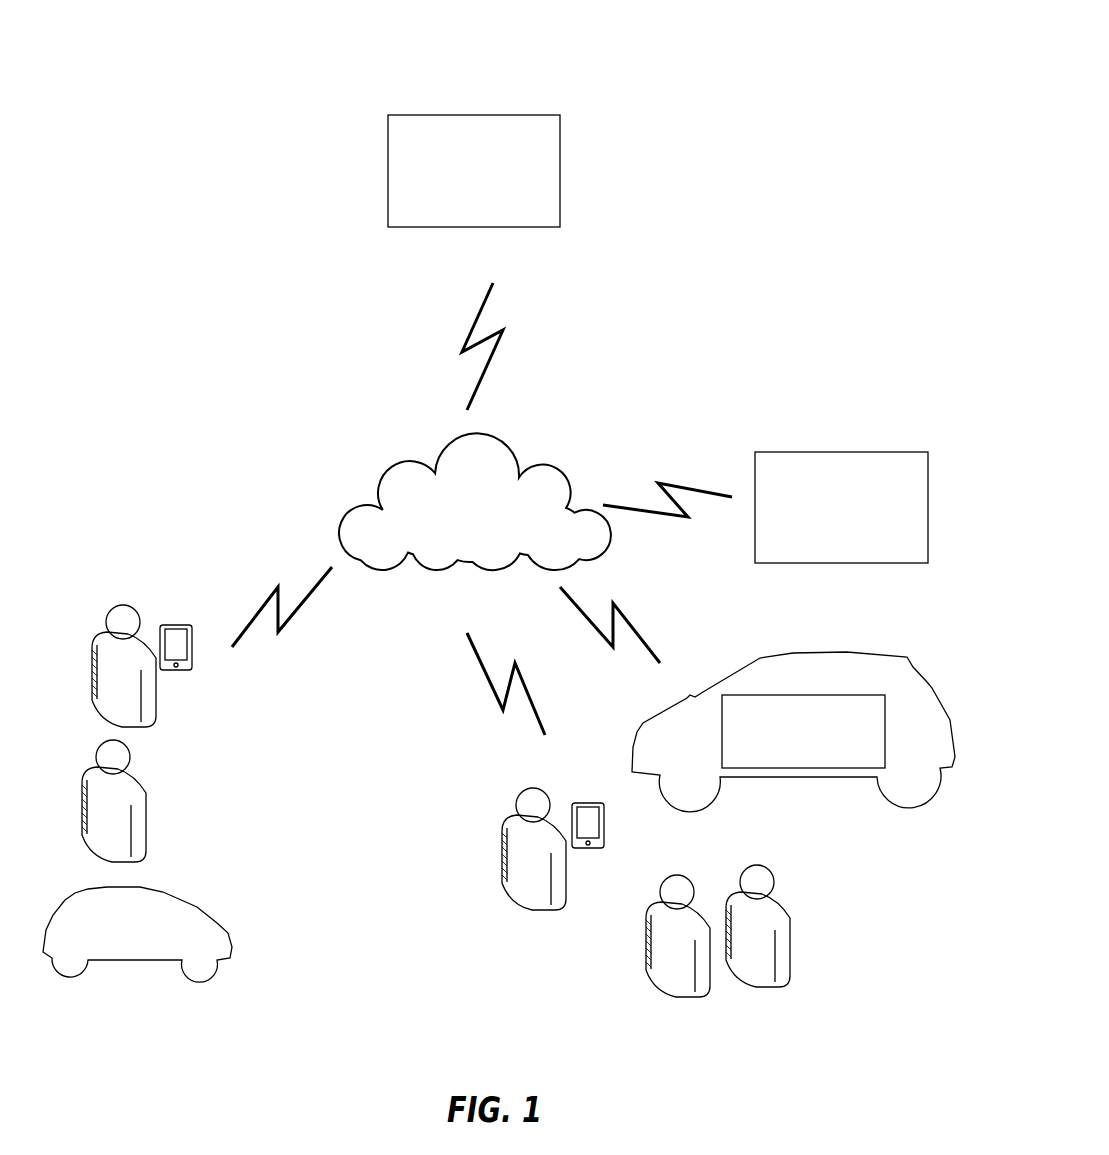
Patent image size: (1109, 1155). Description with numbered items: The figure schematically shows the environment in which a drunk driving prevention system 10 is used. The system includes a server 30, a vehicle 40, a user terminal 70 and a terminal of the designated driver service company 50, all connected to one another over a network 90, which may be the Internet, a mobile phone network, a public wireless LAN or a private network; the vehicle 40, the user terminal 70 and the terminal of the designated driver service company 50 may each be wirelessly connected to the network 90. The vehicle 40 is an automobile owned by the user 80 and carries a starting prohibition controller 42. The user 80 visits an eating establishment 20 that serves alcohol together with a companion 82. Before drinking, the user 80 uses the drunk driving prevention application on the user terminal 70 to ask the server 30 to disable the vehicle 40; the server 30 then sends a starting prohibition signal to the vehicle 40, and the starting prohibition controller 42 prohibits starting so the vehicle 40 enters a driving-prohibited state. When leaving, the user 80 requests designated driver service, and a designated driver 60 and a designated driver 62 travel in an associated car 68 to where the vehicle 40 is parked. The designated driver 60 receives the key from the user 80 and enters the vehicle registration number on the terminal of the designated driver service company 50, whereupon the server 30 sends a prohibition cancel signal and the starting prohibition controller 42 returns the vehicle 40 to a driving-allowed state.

The drunk driving prevention system 10 is at (868, 42).
The eating establishment 20 is at (907, 450).
The server 30 is at (545, 115).
The vehicle 40 is at (852, 652).
The starting prohibition controller 42 is at (840, 695).
The terminal of the designated driver service company 50 is at (180, 625).
The designated driver 60 is at (113, 603).
The designated driver 62 is at (100, 742).
The associated car 68 is at (85, 887).
The user terminal 70 is at (583, 803).
The user 80 is at (522, 788).
The companion 82 is at (662, 878).
The network 90 is at (562, 473).